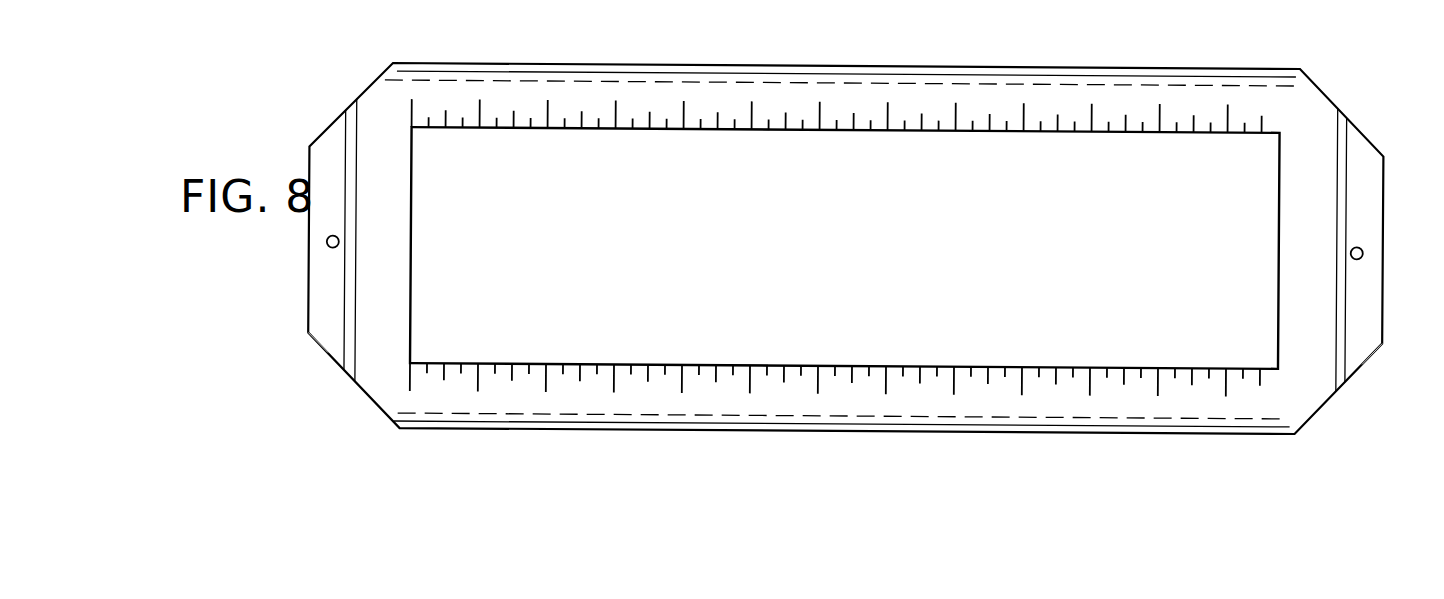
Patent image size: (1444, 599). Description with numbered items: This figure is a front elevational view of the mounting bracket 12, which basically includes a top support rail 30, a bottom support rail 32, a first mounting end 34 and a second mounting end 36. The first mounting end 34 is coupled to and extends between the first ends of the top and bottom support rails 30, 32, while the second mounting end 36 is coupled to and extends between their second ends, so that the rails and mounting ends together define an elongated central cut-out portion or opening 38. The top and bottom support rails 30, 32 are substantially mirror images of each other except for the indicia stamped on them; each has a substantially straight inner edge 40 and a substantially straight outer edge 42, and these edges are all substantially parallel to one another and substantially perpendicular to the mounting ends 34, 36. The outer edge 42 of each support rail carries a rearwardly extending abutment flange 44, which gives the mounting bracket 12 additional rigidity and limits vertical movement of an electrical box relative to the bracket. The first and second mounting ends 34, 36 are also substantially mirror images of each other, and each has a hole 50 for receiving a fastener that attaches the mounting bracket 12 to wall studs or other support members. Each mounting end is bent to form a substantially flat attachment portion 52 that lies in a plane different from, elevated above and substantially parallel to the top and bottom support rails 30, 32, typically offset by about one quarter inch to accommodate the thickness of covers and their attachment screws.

The mounting bracket 12 is at (376, 74).
The top support rail 30 is at (527, 102).
The bottom support rail 32 is at (585, 391).
The first mounting end 34 is at (377, 149).
The second mounting end 36 is at (1307, 161).
The central cut-out portion or opening 38 is at (414, 288).
The inner edge 40 is at (705, 128).
The outer edge 42 is at (733, 80).
The abutment flange 44 is at (652, 72).
The hole 50 is at (329, 246).
The attachment portion 52 is at (325, 318).